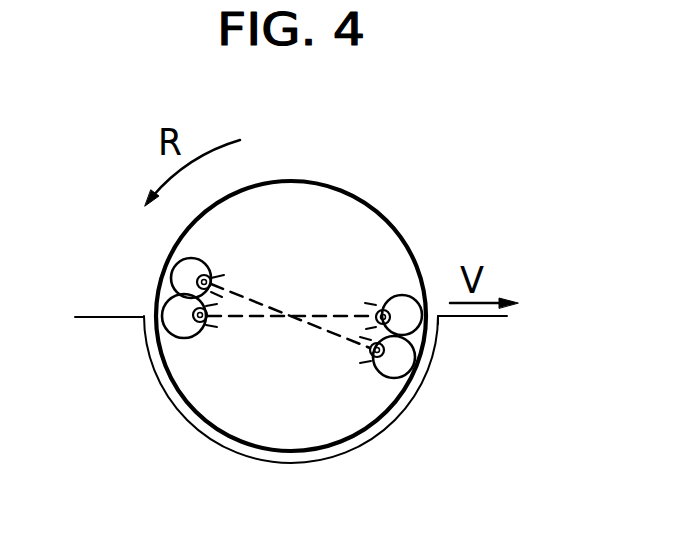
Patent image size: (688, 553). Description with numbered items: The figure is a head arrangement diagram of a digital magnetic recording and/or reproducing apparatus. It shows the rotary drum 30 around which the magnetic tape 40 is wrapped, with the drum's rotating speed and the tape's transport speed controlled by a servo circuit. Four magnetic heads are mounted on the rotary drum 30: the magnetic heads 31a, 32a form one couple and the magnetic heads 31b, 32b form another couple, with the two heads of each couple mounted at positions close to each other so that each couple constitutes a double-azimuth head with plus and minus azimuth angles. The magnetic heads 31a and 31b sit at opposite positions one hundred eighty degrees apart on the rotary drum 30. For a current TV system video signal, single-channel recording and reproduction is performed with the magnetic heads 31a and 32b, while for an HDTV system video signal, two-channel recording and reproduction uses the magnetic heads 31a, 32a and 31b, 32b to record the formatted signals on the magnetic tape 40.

The rotary drum 30 is at (412, 252).
The magnetic tape 40 is at (103, 318).
The magnetic head 31a is at (423, 318).
The magnetic head 31b is at (158, 306).
The magnetic head 32a is at (414, 362).
The magnetic head 32b is at (173, 270).